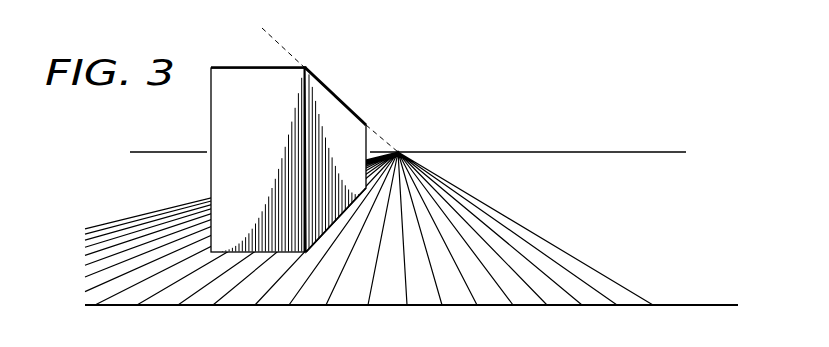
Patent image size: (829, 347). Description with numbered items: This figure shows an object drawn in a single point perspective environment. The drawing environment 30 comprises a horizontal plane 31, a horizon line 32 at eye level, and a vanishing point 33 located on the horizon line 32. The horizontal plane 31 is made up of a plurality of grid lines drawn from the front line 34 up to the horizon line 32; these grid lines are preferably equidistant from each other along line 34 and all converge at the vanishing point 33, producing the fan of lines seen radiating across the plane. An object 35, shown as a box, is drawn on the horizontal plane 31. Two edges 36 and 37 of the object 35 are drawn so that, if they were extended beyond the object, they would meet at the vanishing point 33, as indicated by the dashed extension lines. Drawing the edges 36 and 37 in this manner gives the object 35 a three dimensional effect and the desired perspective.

The drawing environment 30 is at (730, 74).
The horizontal plane 31 is at (560, 218).
The horizon line 32 is at (599, 150).
The vanishing point 33 is at (401, 147).
The line 34 is at (705, 302).
The object 35 is at (243, 66).
The edge 36 is at (338, 92).
The edge 37 is at (328, 227).